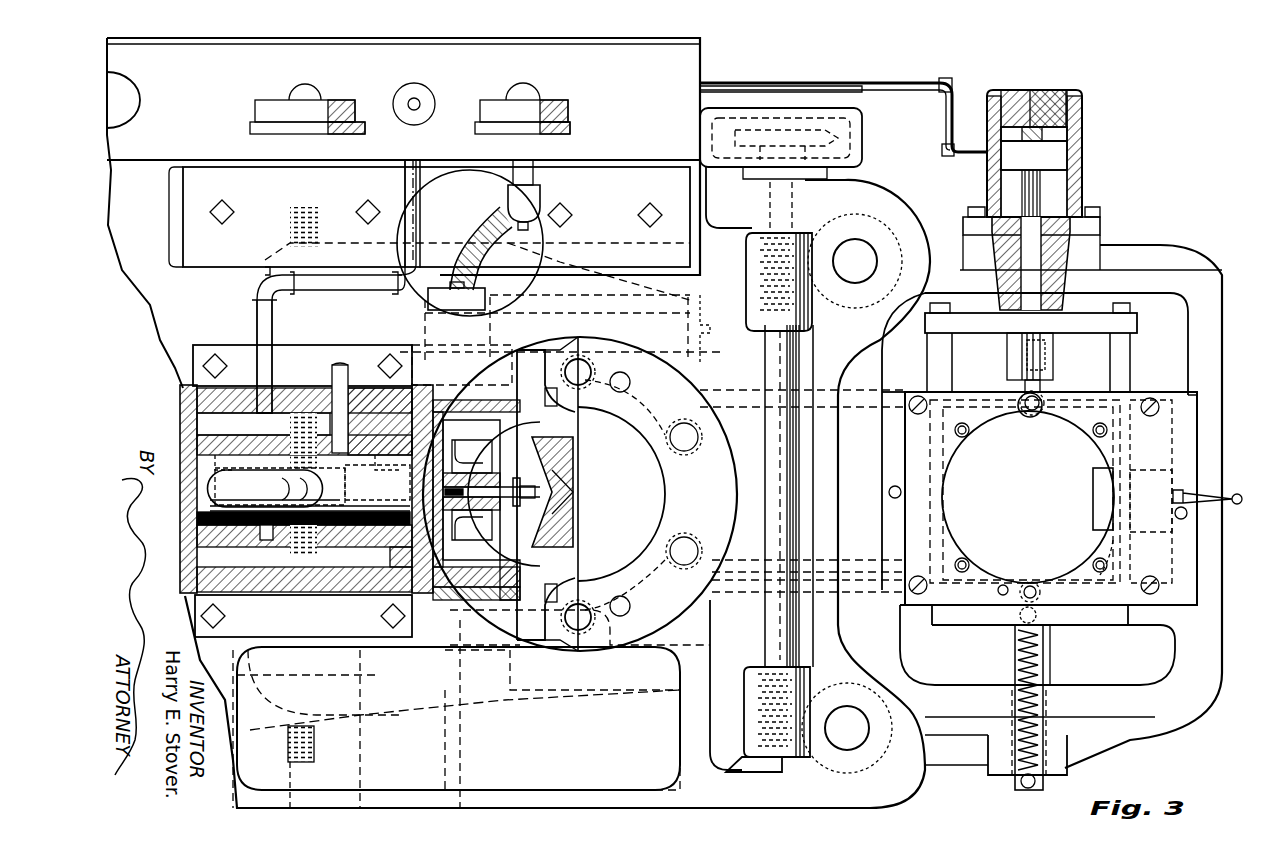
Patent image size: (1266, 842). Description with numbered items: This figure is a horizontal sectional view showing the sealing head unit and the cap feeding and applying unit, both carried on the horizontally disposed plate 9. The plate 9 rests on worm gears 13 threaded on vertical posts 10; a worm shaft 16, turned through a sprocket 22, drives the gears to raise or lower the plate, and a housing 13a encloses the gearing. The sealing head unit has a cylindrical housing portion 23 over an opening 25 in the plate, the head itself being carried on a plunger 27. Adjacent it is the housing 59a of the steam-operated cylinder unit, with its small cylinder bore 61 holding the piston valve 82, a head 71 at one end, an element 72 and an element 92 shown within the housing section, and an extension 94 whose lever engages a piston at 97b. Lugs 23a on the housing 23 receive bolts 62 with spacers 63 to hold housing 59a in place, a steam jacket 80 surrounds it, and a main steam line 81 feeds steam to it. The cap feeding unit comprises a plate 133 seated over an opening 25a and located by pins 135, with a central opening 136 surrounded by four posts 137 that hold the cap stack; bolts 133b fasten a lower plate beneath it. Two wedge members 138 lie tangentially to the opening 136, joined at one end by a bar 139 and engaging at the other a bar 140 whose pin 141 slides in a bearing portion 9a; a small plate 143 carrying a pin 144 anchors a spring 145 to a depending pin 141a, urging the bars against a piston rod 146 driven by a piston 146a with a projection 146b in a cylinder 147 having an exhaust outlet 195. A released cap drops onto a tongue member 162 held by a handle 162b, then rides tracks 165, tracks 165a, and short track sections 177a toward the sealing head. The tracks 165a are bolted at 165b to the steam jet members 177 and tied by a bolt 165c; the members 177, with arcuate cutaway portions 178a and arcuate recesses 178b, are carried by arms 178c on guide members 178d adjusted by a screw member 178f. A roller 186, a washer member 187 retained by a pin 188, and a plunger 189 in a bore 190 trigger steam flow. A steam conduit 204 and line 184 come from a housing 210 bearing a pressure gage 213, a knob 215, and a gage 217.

The plate 9 is at (158, 312).
The bearing portion 9a is at (1000, 749).
The posts 10 is at (855, 261).
The worm gears 13 is at (863, 215).
The housing 13a is at (863, 128).
The worm shaft 16 is at (778, 203).
The sprocket 22 is at (800, 120).
The cylindrical housing portion 23 is at (535, 458).
The lugs 23a is at (535, 375).
The opening 25 is at (650, 494).
The opening 25a is at (1150, 643).
The plunger 27 is at (572, 473).
The housing 59a is at (305, 392).
The small cylinder bore 61 is at (263, 423).
The bolts 62 is at (505, 603).
The spacers 63 is at (462, 602).
The head 71 is at (186, 390).
The end wall 72 is at (420, 392).
The steam jacket 80 is at (247, 560).
The main steam line 81 is at (264, 323).
The piston valve 82 is at (307, 484).
The valve 92 is at (260, 511).
The extension 94 is at (460, 462).
The engagement point 97b is at (432, 490).
The plate 133 is at (1178, 407).
The bolts 133b is at (910, 600).
The pins 135 is at (889, 493).
The opening 136 is at (975, 516).
The posts 137 is at (968, 434).
The cap separating wedge members 138 is at (1112, 547).
The bar 139 is at (1120, 328).
The bar 140 is at (952, 617).
The pin 141 is at (1015, 654).
The depending pin 141a is at (1015, 784).
The small plate 143 is at (1015, 674).
The pin 144 is at (1012, 622).
The spring 145 is at (1040, 664).
The piston rod 146 is at (1040, 185).
The piston 146a is at (1040, 155).
The projection 146b is at (1030, 120).
The cylinder 147 is at (1068, 130).
The tongue member 162 is at (1100, 494).
The handle 162b is at (1186, 491).
The tracks 165 is at (960, 400).
The tracks 165a is at (858, 402).
The bolts 165b is at (710, 325).
The bolt 165c is at (808, 570).
The steam jet members 177 is at (700, 336).
The short track sections 177a is at (655, 405).
The arcuate cutaway portion 178a is at (598, 494).
The arcuate recess 178b is at (615, 372).
The arms 178c is at (610, 690).
The guide members 178d is at (360, 690).
The screw member 178f is at (314, 747).
The line 184 is at (483, 235).
The roller 186 is at (1033, 585).
The washer member 187 is at (1032, 415).
The pin 188 is at (1046, 405).
The plunger 189 is at (1042, 388).
The bore 190 is at (1046, 357).
The exhaust outlet 195 is at (990, 212).
The steam conduit 204 is at (930, 81).
The housing 210 is at (690, 72).
The steam pressure gage 213 is at (270, 112).
The rotatable knob 215 is at (414, 98).
The pressure gage 217 is at (523, 112).